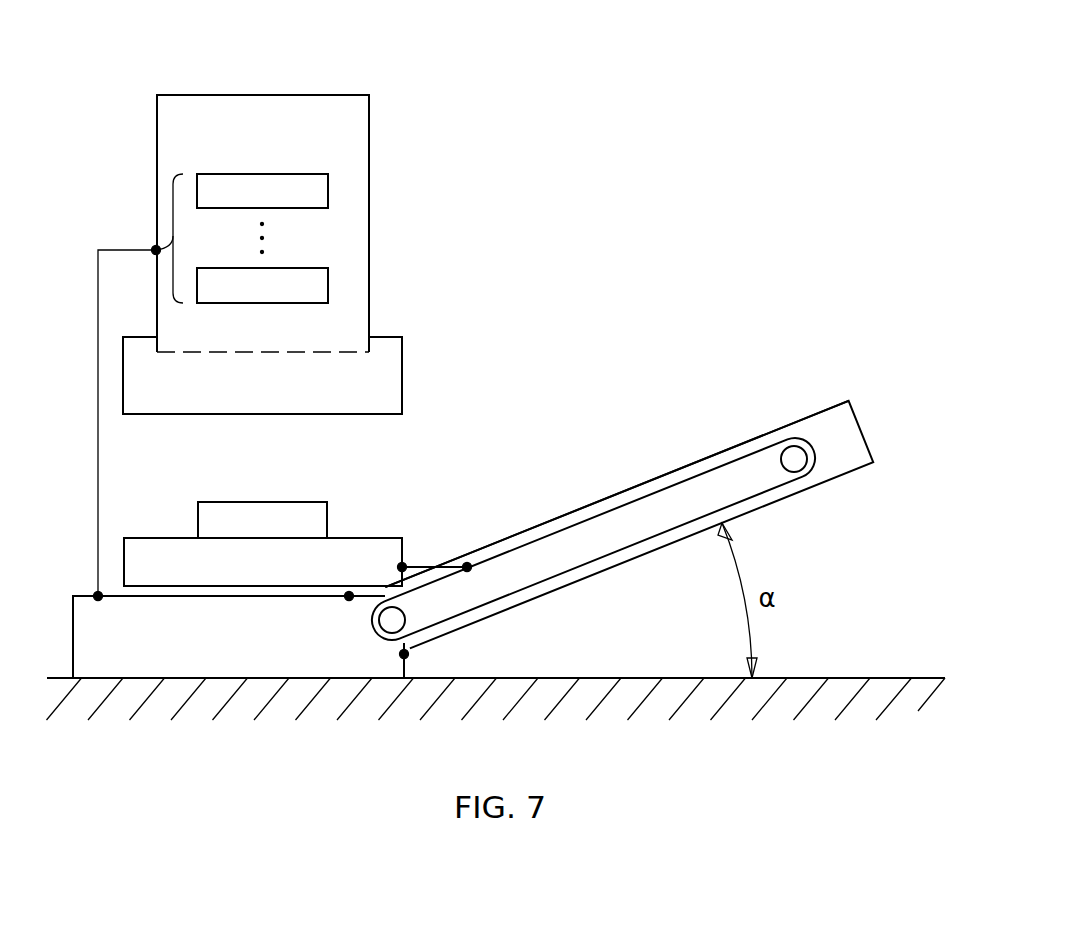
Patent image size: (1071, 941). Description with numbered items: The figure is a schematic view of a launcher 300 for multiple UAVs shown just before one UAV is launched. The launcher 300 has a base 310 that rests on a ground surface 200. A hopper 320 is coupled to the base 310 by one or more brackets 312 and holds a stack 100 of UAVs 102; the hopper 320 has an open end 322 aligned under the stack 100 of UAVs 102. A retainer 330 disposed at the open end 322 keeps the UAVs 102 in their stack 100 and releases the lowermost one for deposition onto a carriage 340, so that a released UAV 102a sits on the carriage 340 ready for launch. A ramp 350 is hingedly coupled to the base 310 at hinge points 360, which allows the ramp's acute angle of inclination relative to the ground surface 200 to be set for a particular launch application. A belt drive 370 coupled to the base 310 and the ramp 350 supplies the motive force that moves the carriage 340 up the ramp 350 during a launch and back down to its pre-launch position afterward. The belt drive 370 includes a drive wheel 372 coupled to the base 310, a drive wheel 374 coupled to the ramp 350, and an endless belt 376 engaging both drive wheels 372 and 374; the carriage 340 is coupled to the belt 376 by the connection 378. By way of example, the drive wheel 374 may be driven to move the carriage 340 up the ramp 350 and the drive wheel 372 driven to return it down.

The stack 100 is at (156, 250).
The UAVs 102 is at (328, 192).
The UAV 102a is at (298, 502).
The ground surface 200 is at (845, 678).
The launcher 300 is at (448, 38).
The base 310 is at (73, 645).
The brackets 312 is at (98, 350).
The hopper 320 is at (157, 135).
The open end 322 is at (332, 352).
The retainer 330 is at (402, 372).
The carriage 340 is at (383, 538).
The ramp 350 is at (665, 547).
The hinge points 360 is at (349, 596).
The belt drive 370 is at (677, 474).
The drive wheel 372 is at (378, 641).
The drive wheel 374 is at (790, 445).
The endless belt 376 is at (630, 489).
The connection 378 is at (450, 562).